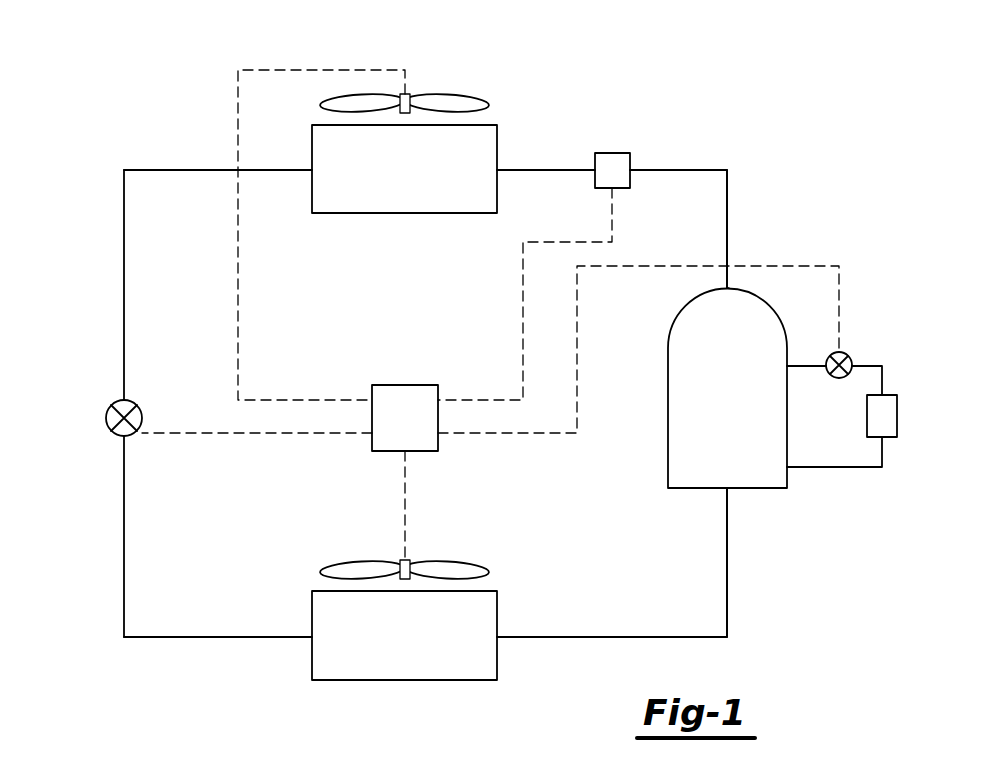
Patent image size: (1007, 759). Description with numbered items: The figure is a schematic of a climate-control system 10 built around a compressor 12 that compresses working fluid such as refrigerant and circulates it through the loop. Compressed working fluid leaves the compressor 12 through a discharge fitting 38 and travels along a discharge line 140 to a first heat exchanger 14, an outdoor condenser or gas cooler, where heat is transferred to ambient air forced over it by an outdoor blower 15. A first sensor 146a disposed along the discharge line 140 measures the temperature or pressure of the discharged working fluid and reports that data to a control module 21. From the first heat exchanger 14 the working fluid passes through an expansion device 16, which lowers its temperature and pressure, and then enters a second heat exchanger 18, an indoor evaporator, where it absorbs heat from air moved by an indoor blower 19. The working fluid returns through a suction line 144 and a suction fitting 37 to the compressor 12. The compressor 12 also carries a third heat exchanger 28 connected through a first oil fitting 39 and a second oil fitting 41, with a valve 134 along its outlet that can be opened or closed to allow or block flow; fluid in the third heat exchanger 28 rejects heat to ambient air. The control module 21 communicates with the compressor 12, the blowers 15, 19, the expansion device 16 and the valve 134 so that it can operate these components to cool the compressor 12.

The climate-control system 10 is at (690, 76).
The compressor 12 is at (668, 340).
The first heat exchanger 14 is at (428, 213).
The outdoor blower 15 is at (455, 99).
The expansion device 16 is at (107, 410).
The second heat exchanger 18 is at (337, 680).
The indoor blower 19 is at (430, 562).
The control module 21 is at (386, 385).
The third heat exchanger 28 is at (903, 406).
The suction fitting 37 is at (727, 488).
The discharge fitting 38 is at (727, 288).
The first oil fitting 39 is at (787, 366).
The second oil fitting 41 is at (787, 468).
The valve 134 is at (843, 353).
The discharge line 140 is at (728, 180).
The suction line 144 is at (727, 582).
The first sensor 146a is at (606, 152).